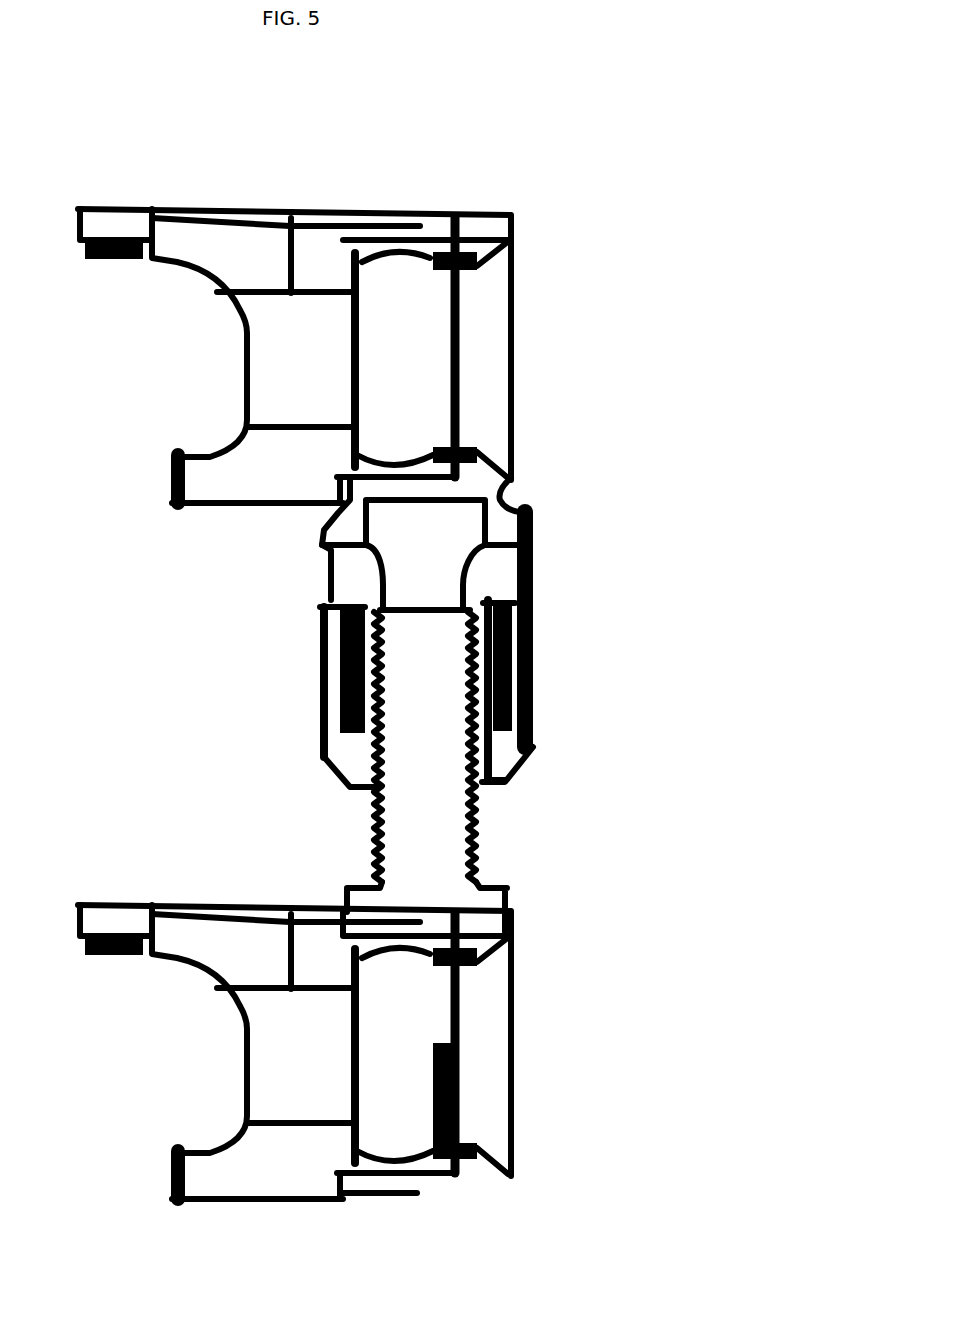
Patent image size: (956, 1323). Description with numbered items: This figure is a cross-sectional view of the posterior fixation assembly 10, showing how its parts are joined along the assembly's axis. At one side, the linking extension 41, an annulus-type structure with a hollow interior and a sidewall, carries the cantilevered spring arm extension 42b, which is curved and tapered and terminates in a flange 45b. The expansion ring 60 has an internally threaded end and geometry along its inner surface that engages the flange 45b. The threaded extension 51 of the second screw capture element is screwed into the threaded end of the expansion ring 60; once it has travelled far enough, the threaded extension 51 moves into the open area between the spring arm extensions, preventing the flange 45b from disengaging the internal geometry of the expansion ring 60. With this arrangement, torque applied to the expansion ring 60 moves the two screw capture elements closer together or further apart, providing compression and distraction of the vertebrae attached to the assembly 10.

The posterior fixation assembly 10 is at (575, 150).
The linking extension 41 is at (513, 522).
The spring arm extension 42b is at (338, 668).
The flange 45b is at (342, 700).
The expansion ring 60 is at (345, 748).
The threaded extension 51 is at (427, 837).